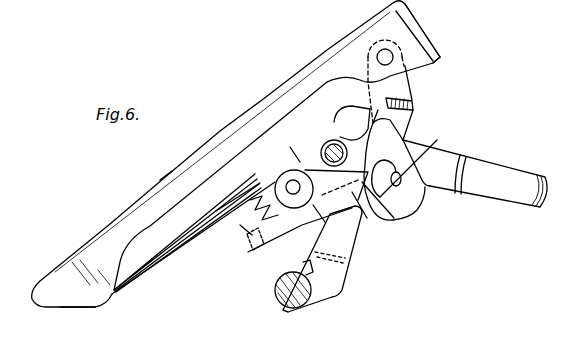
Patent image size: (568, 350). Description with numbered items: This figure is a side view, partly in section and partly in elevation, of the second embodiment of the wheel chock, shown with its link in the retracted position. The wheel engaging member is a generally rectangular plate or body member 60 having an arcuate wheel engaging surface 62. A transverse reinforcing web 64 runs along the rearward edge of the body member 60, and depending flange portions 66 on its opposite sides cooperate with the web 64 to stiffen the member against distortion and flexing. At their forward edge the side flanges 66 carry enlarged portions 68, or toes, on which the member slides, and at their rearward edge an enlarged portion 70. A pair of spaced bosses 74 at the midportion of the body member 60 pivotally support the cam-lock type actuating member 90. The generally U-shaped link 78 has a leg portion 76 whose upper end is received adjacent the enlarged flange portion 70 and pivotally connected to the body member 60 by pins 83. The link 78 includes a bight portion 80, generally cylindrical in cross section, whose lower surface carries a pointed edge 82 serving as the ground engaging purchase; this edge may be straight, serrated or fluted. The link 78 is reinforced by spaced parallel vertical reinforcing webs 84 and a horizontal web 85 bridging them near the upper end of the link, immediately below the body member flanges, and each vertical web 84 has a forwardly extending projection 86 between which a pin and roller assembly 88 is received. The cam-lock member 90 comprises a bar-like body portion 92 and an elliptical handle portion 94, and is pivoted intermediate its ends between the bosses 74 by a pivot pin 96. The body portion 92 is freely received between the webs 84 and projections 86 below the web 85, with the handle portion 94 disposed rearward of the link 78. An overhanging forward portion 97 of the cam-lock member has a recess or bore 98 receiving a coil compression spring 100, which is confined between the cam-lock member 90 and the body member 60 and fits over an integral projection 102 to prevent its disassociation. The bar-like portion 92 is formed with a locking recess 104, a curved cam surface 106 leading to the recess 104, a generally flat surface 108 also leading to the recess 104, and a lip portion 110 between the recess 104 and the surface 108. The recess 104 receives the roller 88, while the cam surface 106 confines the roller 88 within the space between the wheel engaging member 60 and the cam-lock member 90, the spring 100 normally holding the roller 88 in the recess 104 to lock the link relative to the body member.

The body member 60 is at (65, 262).
The arcuate wheel engaging surface 62 is at (127, 211).
The transverse reinforcing web 64 is at (440, 57).
The depending flange portions 66 is at (165, 178).
The enlarged portions 68 is at (95, 302).
The enlarged flange portion 70 is at (410, 25).
The spaced bosses 74 is at (297, 152).
The leg portion 76 is at (410, 78).
The U-shaped link 78 is at (346, 292).
The bight portion 80 is at (280, 295).
The pointed edge 82 is at (288, 312).
The pins 83 is at (381, 52).
The vertical reinforcing webs 84 is at (345, 262).
The horizontal web 85 is at (413, 105).
The forwardly extending projection 86 is at (352, 123).
The pin and roller assembly 88 is at (332, 140).
The cam-lock actuating member 90 is at (418, 216).
The bar-like body portion 92 is at (300, 232).
The elliptical handle portion 94 is at (511, 192).
The pivot pin 96 is at (287, 186).
The overhanging forward portion 97 is at (258, 254).
The recess or bore 98 is at (260, 252).
The coil compression spring 100 is at (242, 232).
The integral projection 102 is at (216, 211).
The locking recess 104 is at (394, 220).
The curved cam surface 106 is at (425, 162).
The generally flat surface 108 is at (336, 196).
The lip portion 110 is at (346, 220).